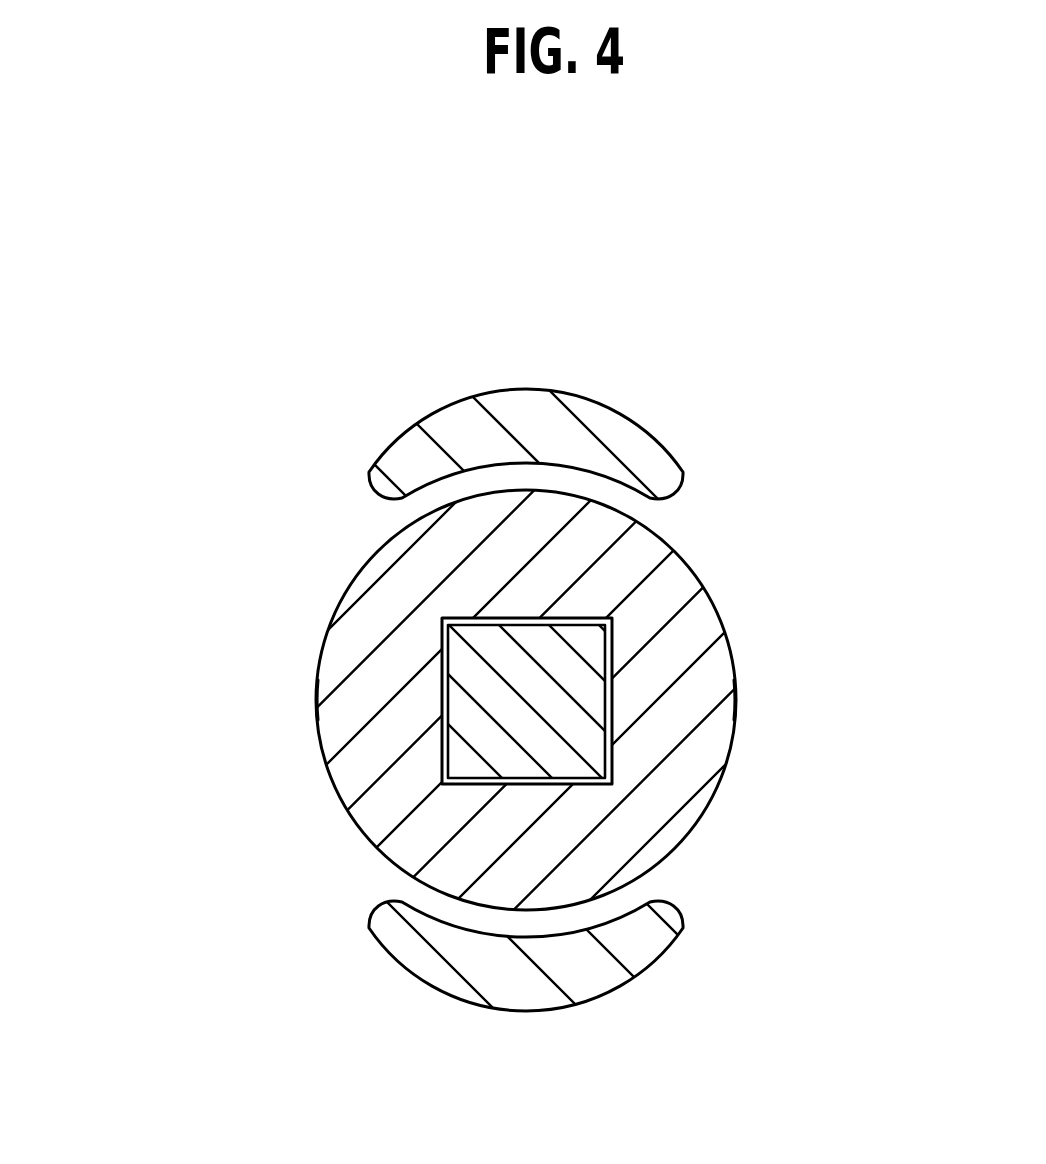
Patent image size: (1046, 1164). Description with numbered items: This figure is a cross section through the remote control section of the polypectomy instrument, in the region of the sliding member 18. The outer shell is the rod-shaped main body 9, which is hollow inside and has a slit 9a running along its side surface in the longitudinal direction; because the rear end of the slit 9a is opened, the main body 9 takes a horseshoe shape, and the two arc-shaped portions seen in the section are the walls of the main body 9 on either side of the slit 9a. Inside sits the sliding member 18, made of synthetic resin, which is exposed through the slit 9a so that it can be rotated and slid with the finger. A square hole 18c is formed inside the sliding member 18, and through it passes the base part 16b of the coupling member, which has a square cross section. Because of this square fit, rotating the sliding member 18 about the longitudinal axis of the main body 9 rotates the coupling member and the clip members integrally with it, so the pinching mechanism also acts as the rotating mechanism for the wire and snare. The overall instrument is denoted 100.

The motor / rotor assembly 100 is at (107, 331).
The main body 9 is at (523, 390).
The slit 9a is at (290, 710).
The sliding member 18 is at (713, 608).
The square hole 18c is at (612, 713).
The base part 16b is at (477, 730).